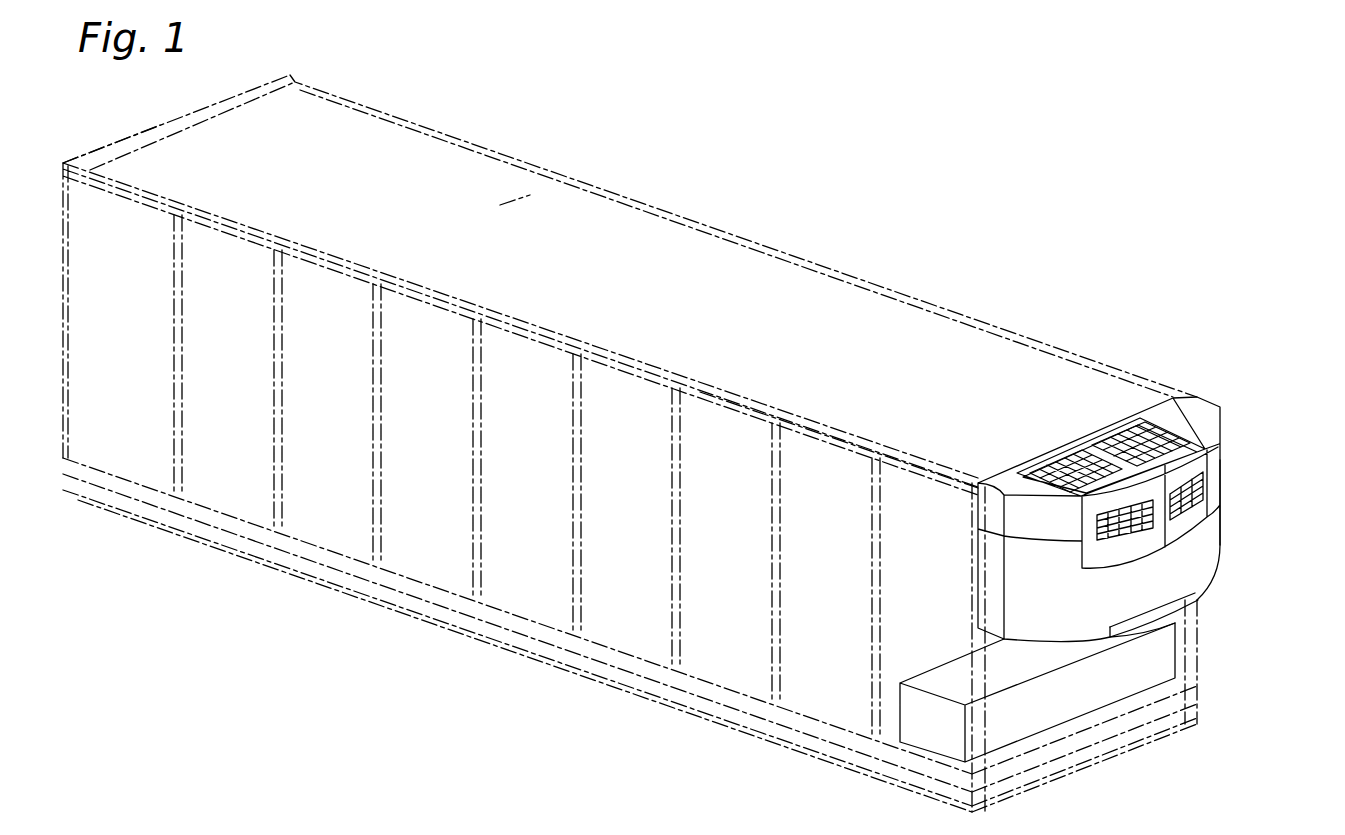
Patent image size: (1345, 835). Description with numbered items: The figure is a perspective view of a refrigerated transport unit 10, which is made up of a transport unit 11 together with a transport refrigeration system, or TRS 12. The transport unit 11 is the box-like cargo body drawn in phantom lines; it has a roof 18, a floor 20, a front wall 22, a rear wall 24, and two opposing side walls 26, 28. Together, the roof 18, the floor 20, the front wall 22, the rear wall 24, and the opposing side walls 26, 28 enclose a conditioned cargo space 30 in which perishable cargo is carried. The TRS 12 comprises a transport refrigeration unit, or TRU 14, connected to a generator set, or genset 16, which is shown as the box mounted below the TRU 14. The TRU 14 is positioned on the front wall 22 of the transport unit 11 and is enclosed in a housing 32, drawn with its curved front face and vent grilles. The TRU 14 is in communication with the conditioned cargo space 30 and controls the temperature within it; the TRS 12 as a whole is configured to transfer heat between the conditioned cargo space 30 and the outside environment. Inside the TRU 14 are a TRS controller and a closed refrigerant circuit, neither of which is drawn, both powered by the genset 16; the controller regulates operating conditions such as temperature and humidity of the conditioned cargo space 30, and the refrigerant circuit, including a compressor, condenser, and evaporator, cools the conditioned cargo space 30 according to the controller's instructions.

The refrigerated transport unit 10 is at (825, 158).
The transport unit 11 is at (978, 317).
The TRS 12 is at (1222, 349).
The TRU 14 is at (1228, 557).
The genset 16 is at (1157, 668).
The roof 18 is at (332, 127).
The floor 20 is at (548, 623).
The front wall 22 is at (1190, 637).
The rear wall 24 is at (160, 170).
The side wall 26 is at (427, 532).
The side wall 28 is at (497, 207).
The conditioned cargo space 30 is at (847, 387).
The housing 32 is at (1218, 490).